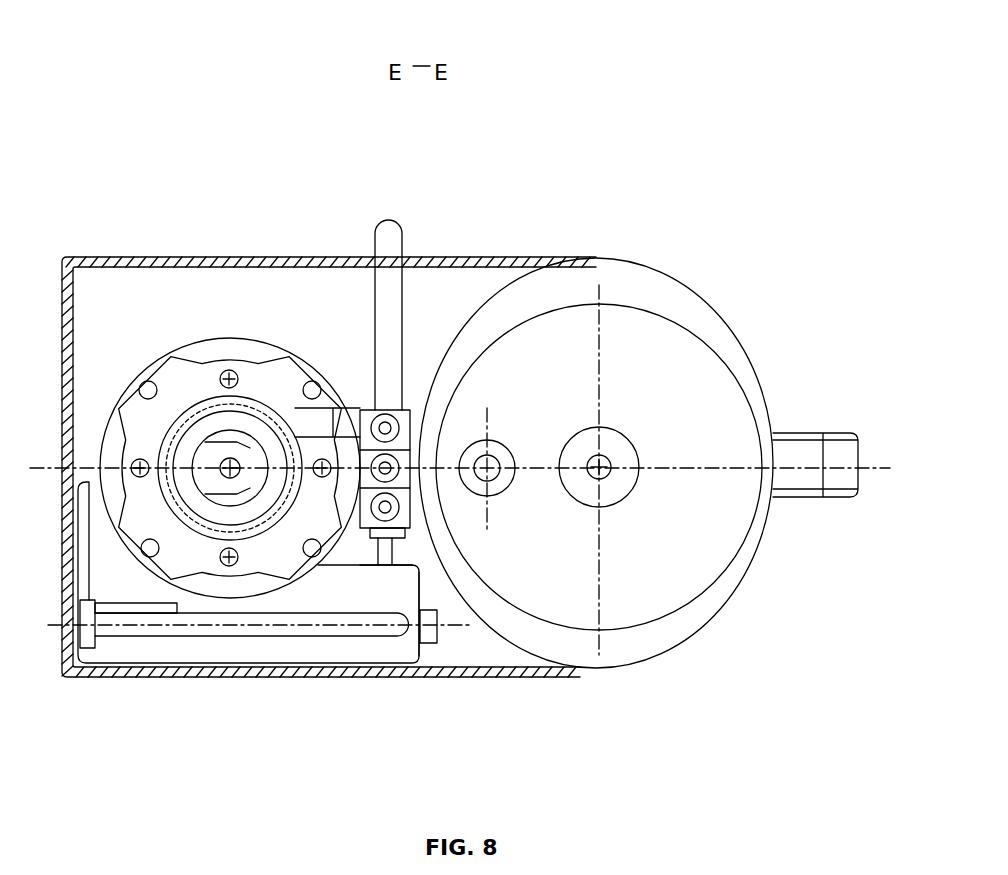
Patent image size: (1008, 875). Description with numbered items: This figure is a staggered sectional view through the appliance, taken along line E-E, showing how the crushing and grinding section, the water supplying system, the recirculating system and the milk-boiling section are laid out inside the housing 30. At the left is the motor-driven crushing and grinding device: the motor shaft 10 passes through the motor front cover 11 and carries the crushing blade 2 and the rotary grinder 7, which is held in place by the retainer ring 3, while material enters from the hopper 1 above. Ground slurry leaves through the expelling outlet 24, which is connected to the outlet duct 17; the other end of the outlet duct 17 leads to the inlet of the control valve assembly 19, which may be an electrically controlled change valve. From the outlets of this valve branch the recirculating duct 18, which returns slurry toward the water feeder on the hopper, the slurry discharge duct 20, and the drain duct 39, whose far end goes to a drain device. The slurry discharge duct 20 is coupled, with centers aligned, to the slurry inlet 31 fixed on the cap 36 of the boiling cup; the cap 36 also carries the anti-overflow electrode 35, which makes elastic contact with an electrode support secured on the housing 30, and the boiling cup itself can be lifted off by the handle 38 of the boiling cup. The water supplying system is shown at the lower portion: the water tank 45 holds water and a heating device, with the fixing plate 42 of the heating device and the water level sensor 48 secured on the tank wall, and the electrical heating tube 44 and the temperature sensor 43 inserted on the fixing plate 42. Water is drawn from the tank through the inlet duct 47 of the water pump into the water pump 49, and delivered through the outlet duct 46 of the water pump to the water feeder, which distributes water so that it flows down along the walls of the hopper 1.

The housing 30 is at (137, 258).
The motor front cover 11 is at (142, 437).
The hopper 1 is at (180, 380).
The crushing blade 2 is at (223, 437).
The rotary grinder 7 is at (250, 457).
The retainer ring 3 is at (313, 425).
The expelling outlet 24 is at (322, 430).
The outlet duct 17 is at (392, 350).
The drain duct 39 is at (350, 423).
The recirculating duct 18 is at (365, 425).
The control valve assembly 19 is at (397, 415).
The slurry discharge duct 20 is at (415, 440).
The motor shaft 10 is at (232, 472).
The fixing plate of the heating device 42 is at (83, 640).
The temperature sensor 43 is at (132, 608).
The electrical heating tube 44 is at (193, 627).
The water tank 45 is at (257, 647).
The outlet duct of the water pump 46 is at (387, 540).
The inlet duct of the water pump 47 is at (395, 567).
The water level sensor 48 is at (437, 610).
The water pump 49 is at (480, 578).
The slurry inlet 31 is at (493, 477).
The anti-overflow electrode 35 is at (606, 472).
The cap of the boiling cup 36 is at (697, 483).
The handle of the boiling cup 38 is at (795, 487).